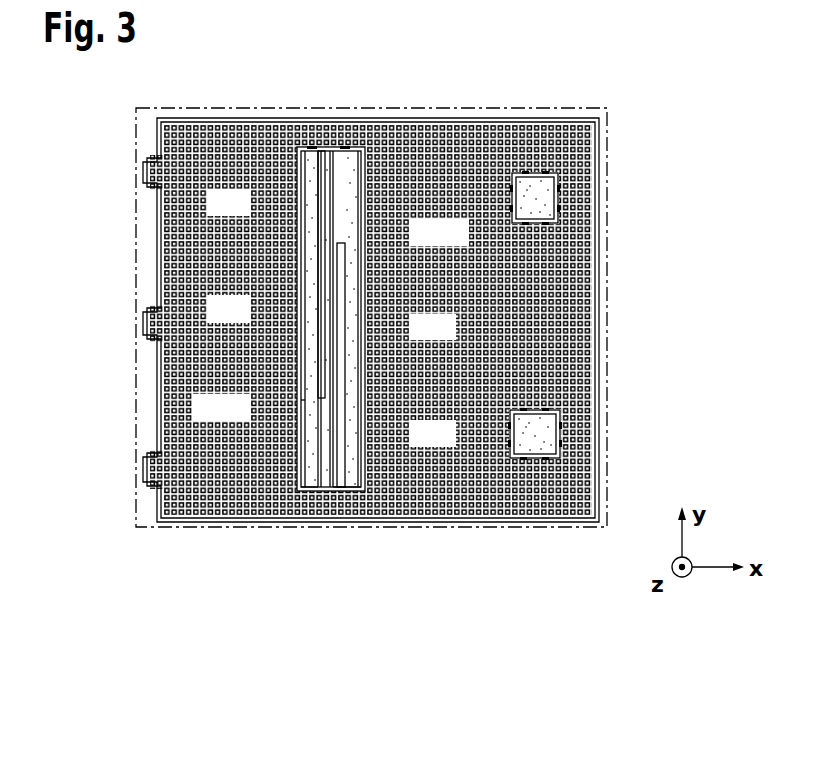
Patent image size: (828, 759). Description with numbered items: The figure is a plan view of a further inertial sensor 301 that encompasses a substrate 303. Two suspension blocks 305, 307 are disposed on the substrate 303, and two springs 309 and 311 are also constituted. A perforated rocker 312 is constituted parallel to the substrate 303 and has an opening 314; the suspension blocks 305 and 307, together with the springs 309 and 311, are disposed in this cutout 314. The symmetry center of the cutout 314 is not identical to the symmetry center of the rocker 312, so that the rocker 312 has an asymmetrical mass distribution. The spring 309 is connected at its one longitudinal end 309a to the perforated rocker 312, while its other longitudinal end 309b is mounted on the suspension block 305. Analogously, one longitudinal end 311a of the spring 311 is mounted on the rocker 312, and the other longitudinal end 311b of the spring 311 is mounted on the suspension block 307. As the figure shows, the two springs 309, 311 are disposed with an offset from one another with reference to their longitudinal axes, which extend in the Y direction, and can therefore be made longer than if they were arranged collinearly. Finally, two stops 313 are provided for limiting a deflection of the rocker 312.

The inertial sensor 301 is at (551, 72).
The substrate 303 is at (603, 124).
The suspension block 305 is at (343, 325).
The suspension block 307 is at (313, 310).
The spring 309 is at (337, 433).
The longitudinal end of spring 309a is at (340, 480).
The longitudinal end of spring 309b is at (340, 230).
The spring 311 is at (327, 200).
The longitudinal end of spring 311a is at (320, 156).
The longitudinal end of spring 311b is at (322, 400).
The perforated rocker 312 is at (582, 498).
The stops 313 is at (537, 196).
The opening 314 is at (307, 482).